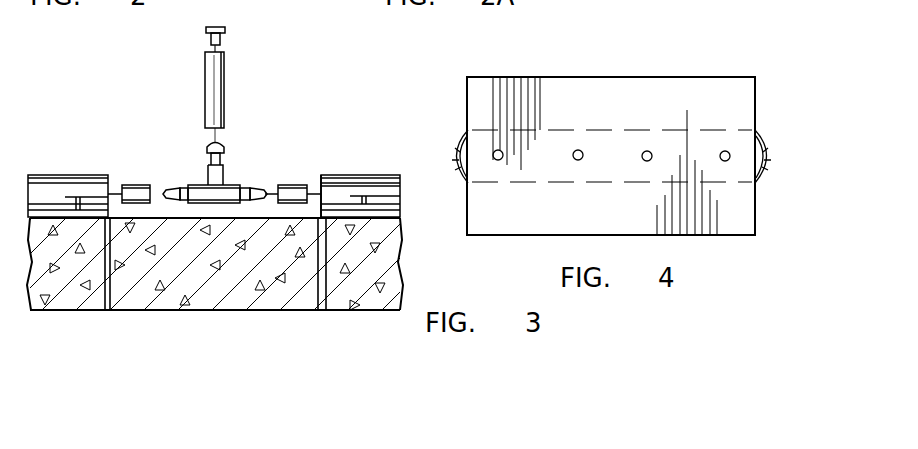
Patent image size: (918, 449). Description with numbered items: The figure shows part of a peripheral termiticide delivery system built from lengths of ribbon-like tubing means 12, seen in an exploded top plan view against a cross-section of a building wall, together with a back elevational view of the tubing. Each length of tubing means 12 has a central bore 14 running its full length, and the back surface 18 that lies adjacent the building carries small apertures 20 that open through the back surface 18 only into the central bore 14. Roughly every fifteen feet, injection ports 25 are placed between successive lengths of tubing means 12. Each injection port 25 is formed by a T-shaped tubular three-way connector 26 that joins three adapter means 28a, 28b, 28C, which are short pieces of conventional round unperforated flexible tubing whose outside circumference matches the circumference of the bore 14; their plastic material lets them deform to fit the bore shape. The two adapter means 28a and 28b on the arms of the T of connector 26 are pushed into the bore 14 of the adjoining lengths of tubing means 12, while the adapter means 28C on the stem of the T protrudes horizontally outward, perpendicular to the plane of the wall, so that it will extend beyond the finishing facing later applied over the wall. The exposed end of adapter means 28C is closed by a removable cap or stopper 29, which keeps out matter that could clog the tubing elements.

In FIG. 3, the tubing means 12 is at (358, 184).
In FIG. 4, the tubing means 12 is at (622, 52).
In FIG. 3, the central bore 14 is at (321, 187).
In FIG. 4, the central bore 14 is at (775, 128).
In FIG. 4, the back surface 18 is at (628, 105).
In FIG. 4, the small apertures 20 is at (500, 150).
In FIG. 3, the injection ports 25 is at (240, 52).
In FIG. 3, the T-shaped tubular three-way connector 26 is at (212, 184).
In FIG. 3, the adapter means 28a is at (293, 183).
In FIG. 3, the adapter means 28b is at (137, 183).
In FIG. 3, the adapter means 28C is at (222, 100).
In FIG. 3, the removable cap or stopper 29 is at (205, 30).